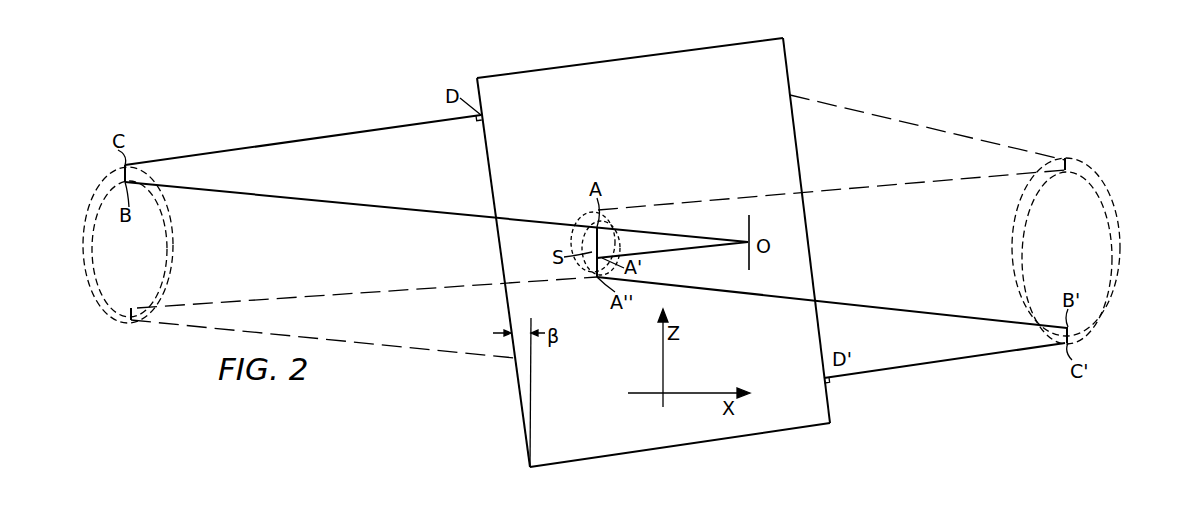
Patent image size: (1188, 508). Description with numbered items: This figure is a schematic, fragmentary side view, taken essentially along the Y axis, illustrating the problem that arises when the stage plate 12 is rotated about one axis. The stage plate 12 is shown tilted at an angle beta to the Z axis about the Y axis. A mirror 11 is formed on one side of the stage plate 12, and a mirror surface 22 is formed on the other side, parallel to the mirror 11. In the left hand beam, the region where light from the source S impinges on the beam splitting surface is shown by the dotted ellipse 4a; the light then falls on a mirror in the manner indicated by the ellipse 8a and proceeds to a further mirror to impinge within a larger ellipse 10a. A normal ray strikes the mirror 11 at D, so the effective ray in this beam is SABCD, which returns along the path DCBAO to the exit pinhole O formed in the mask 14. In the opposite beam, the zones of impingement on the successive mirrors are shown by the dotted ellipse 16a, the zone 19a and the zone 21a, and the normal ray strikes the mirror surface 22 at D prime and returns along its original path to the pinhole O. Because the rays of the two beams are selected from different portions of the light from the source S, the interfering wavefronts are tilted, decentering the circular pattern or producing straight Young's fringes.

The dotted ellipse 4a is at (608, 242).
The ellipse 8a is at (162, 277).
The larger ellipse 10a is at (173, 233).
The mirror 11 is at (499, 244).
The stage plate 12 is at (688, 110).
The mask 14 is at (752, 230).
The dotted ellipse 16a is at (580, 263).
The impingement zone 19a is at (1108, 223).
The impingement zone 21a is at (1112, 303).
The mirror surface 22 is at (798, 160).